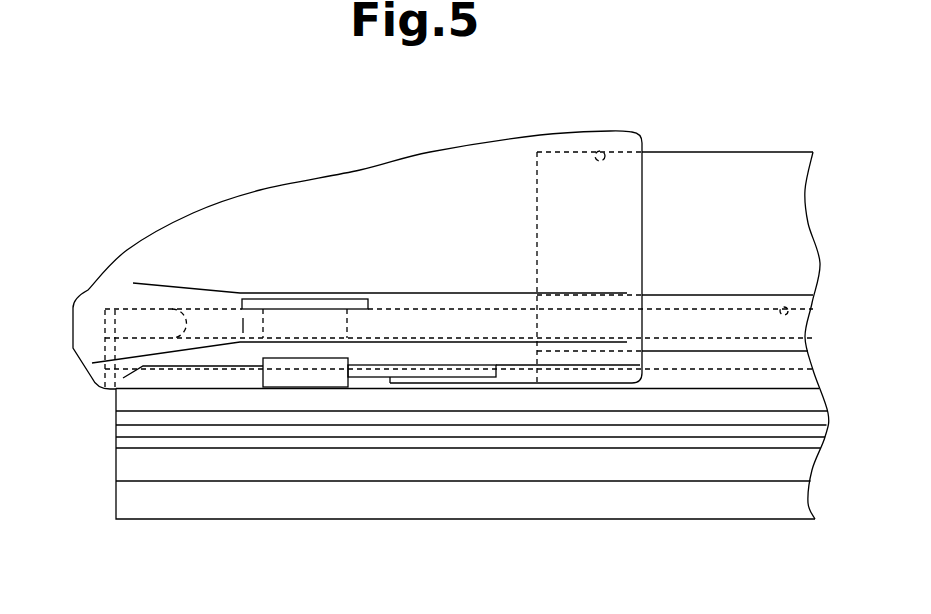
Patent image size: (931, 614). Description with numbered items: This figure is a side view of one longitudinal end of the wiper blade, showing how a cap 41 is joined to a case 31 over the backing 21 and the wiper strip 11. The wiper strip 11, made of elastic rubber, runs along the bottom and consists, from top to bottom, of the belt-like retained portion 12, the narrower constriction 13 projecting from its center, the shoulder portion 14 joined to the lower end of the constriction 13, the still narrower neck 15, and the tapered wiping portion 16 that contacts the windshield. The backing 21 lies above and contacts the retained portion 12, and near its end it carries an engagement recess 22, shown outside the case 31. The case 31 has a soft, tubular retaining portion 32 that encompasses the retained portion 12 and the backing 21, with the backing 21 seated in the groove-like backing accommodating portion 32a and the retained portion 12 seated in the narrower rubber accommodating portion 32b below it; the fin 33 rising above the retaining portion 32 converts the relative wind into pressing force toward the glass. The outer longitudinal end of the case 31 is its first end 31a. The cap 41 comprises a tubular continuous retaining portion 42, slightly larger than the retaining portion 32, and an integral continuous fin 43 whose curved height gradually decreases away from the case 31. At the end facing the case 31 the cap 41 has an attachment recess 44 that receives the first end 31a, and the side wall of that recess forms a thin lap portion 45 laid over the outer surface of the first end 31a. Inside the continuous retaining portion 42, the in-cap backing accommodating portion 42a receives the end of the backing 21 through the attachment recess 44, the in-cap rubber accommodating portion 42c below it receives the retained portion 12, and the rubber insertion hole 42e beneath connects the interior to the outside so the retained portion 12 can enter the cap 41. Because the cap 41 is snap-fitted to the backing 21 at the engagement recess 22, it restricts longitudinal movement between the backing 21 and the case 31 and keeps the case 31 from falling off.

The wiper strip 11 is at (623, 519).
The retained portion 12 is at (105, 352).
The constriction 13 is at (105, 380).
The shoulder portion 14 is at (118, 402).
The neck 15 is at (117, 419).
The wiping portion 16 is at (118, 505).
The backing 21 is at (740, 307).
The engagement recess 22 is at (346, 320).
The case 31 is at (702, 150).
The first end 31a is at (557, 152).
The retaining portion 32 is at (682, 315).
The backing accommodating portion 32a is at (783, 305).
The rubber accommodating portion 32b is at (770, 358).
The fin 33 is at (778, 153).
The cap 41 is at (265, 196).
The continuous retaining portion 42 is at (195, 383).
The in-cap backing accommodating portion 42a is at (213, 315).
The in-cap rubber accommodating portion 42c is at (503, 369).
The rubber insertion hole 42e is at (390, 385).
The continuous fin 43 is at (433, 157).
The attachment recess 44 is at (600, 150).
The lap portion 45 is at (642, 204).